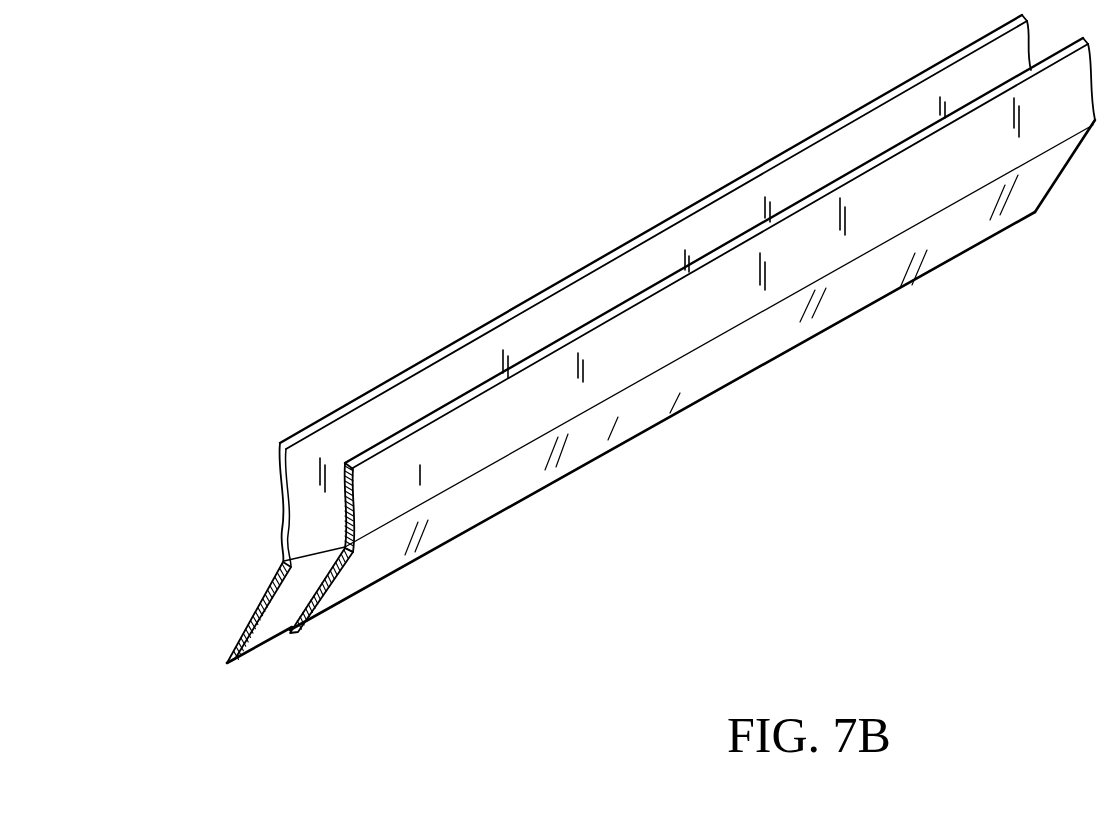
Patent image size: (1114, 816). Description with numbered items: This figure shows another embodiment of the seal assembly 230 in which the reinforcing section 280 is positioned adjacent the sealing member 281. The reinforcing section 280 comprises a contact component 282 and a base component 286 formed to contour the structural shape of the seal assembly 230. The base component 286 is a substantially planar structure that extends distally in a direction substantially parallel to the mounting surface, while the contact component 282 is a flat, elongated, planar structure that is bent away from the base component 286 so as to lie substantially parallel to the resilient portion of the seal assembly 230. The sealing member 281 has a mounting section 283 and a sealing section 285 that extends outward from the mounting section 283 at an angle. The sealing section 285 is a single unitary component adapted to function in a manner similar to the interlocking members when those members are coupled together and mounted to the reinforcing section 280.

The seal assembly 230 is at (640, 367).
The reinforcing section 280 is at (689, 351).
The sealing member 281 is at (608, 367).
The contact component 282 is at (605, 350).
The mounting section 283 is at (265, 633).
The sealing section 285 is at (310, 522).
The base component 286 is at (505, 493).